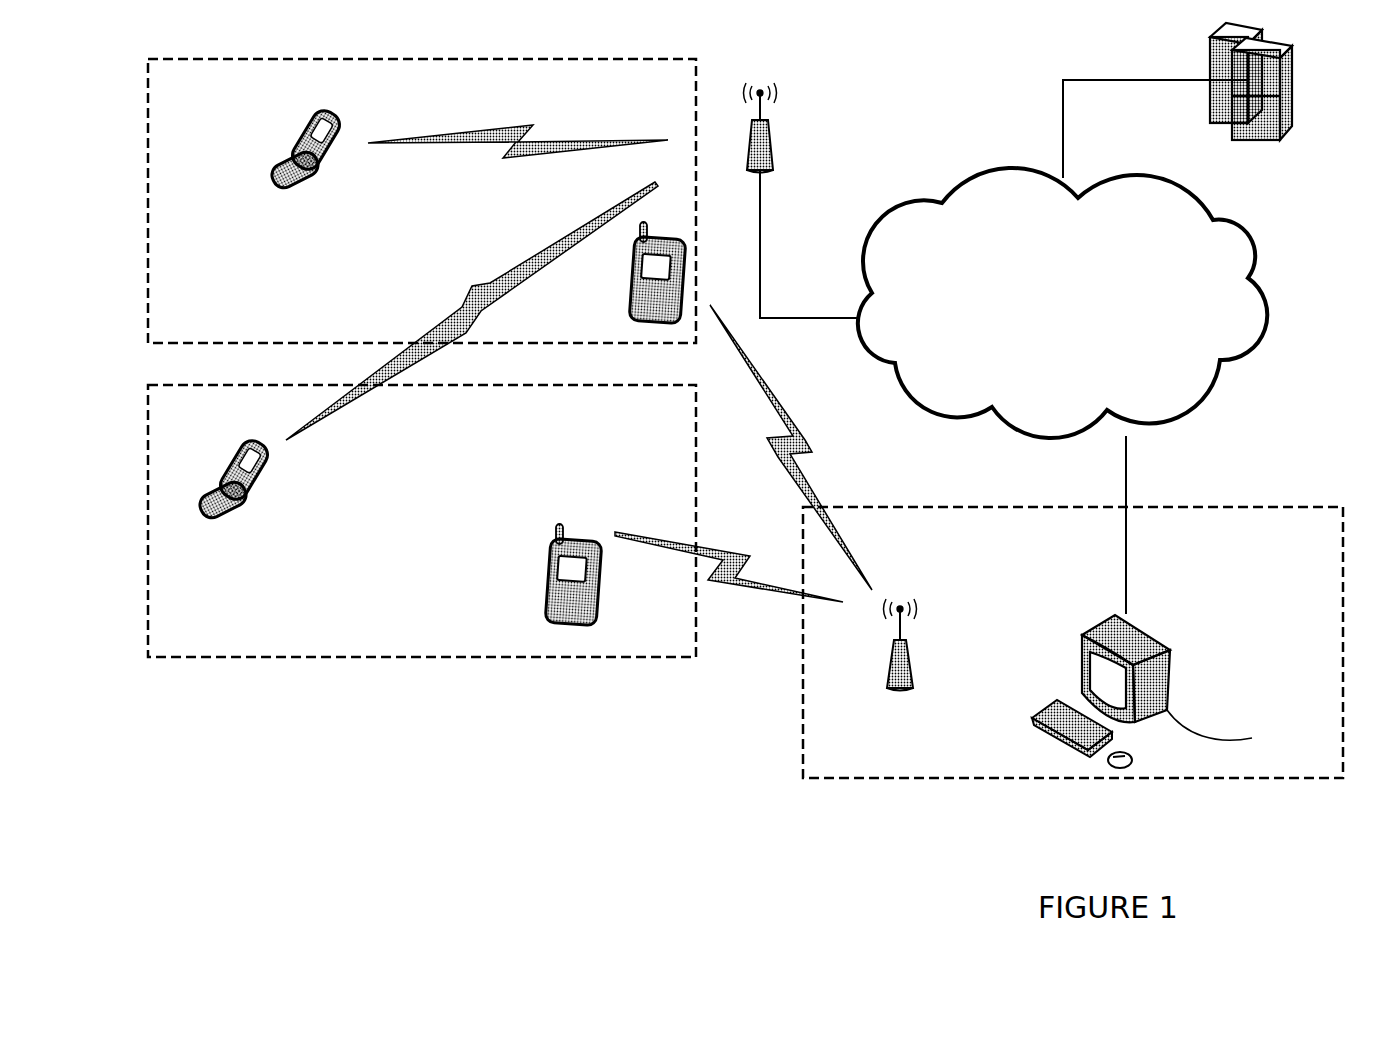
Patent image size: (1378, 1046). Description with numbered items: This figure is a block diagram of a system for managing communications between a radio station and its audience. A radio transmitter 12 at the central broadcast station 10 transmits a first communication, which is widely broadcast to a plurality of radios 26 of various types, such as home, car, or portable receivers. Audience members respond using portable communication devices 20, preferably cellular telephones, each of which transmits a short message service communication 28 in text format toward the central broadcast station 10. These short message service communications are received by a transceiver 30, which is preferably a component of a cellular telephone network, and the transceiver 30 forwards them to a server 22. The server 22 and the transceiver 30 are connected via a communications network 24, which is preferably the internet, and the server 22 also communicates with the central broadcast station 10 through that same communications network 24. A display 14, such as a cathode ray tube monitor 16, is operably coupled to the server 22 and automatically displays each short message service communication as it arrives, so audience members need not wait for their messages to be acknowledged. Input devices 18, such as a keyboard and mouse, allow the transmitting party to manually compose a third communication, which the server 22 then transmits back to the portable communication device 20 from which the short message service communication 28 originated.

The central broadcast station 10 is at (1290, 505).
The radio transmitter 12 is at (926, 655).
The display 14 is at (1186, 640).
The cathode ray tube monitor 16 is at (1230, 731).
The input devices 18 is at (1040, 727).
The portable communication device 20 is at (270, 213).
The server 22 is at (1212, 33).
The communications network 24 is at (1046, 317).
The radios 26 is at (615, 292).
The short message service communication 28 is at (700, 72).
The transceiver 30 is at (792, 128).